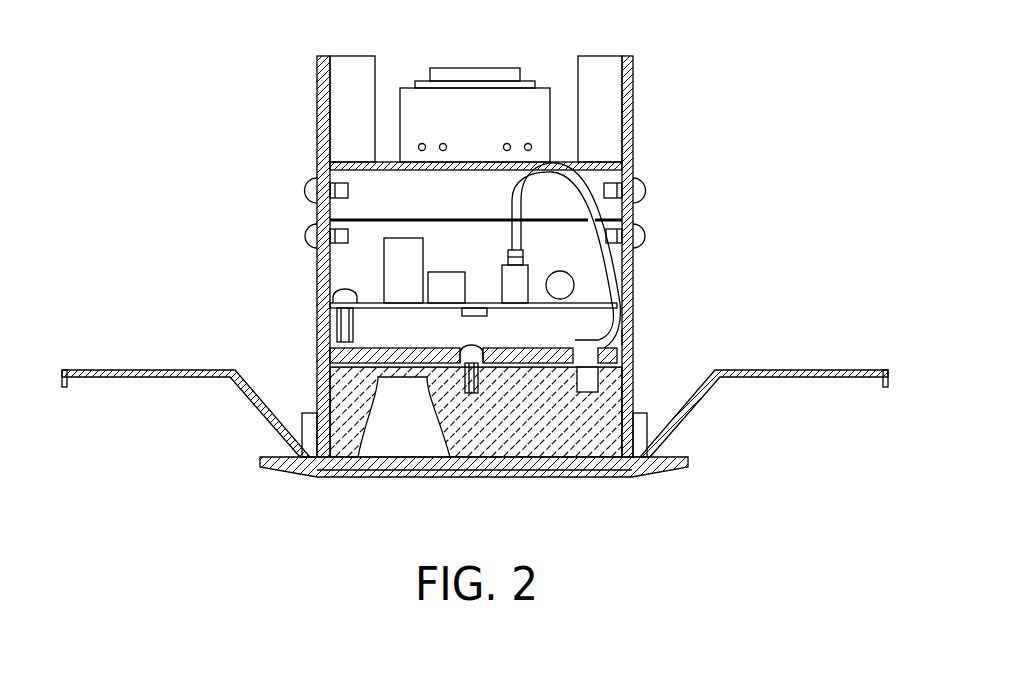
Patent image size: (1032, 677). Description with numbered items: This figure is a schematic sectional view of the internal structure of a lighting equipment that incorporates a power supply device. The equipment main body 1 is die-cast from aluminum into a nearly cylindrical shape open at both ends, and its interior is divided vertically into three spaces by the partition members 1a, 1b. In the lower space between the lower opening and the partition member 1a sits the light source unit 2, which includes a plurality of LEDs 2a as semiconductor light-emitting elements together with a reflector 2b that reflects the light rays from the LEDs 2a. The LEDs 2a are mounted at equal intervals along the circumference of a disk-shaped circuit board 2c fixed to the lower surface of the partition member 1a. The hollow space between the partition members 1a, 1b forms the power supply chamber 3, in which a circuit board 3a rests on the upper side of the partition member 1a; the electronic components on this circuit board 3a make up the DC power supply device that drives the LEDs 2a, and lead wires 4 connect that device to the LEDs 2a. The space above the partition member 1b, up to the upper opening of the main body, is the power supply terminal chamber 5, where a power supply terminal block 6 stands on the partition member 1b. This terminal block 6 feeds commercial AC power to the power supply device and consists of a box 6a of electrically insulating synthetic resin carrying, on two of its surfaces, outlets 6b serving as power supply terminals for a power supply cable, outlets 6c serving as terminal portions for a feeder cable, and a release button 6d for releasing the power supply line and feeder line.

The equipment main body 1 is at (634, 150).
The partition member 1a is at (605, 345).
The partition member 1b is at (598, 162).
The light source unit 2 is at (476, 444).
The LEDs 2a is at (395, 437).
The reflector 2b is at (523, 437).
The circuit board 2c is at (500, 346).
The power supply chamber 3 is at (320, 294).
The circuit board 3a is at (370, 300).
The lead wires 4 is at (604, 212).
The power supply terminal chamber 5 is at (388, 102).
The power supply terminal block 6 is at (501, 92).
The box 6a is at (443, 98).
The outlets 6b is at (422, 143).
The outlets 6c is at (505, 144).
The release button 6d is at (500, 68).